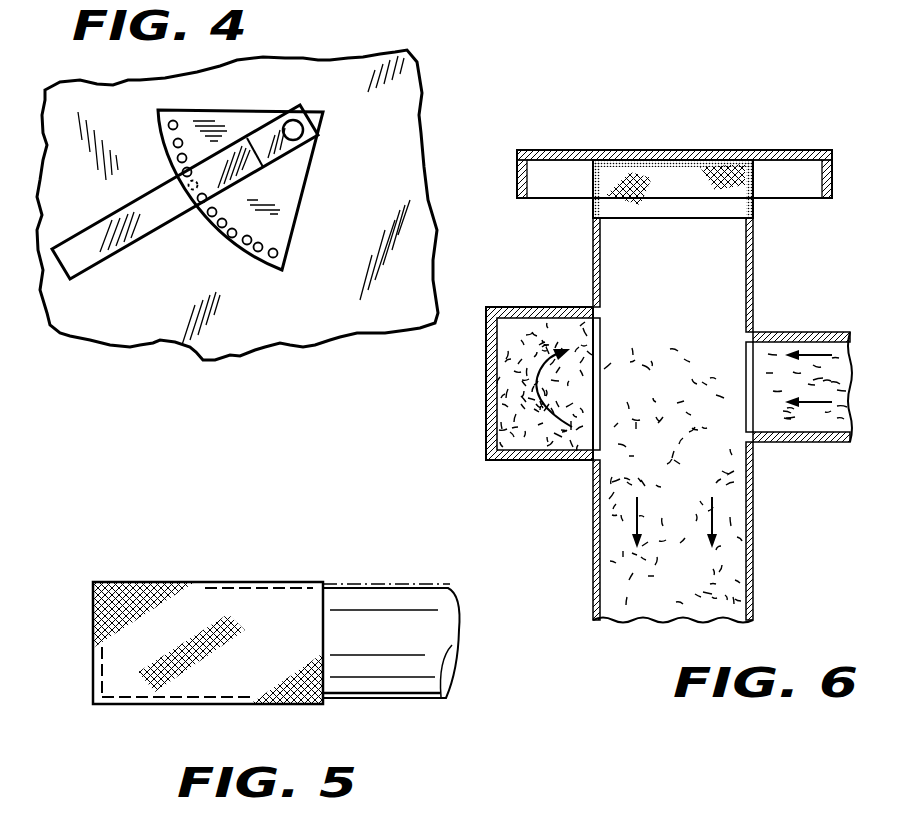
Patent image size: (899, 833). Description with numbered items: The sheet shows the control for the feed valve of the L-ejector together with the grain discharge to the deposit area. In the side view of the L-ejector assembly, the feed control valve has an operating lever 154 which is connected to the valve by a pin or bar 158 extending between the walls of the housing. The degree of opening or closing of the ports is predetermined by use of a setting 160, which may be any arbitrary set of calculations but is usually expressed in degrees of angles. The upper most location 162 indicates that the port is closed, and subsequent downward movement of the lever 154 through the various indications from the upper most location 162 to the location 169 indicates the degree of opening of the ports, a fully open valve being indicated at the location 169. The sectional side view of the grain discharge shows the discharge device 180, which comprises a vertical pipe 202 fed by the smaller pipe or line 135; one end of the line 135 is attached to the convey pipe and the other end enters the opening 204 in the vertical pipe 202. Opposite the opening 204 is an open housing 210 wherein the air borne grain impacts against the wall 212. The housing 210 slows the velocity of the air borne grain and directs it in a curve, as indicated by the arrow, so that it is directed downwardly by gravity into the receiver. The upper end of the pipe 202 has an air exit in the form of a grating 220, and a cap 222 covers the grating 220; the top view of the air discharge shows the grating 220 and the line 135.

In FIG. 5, the line 135 is at (368, 588).
In FIG. 6, the line 135 is at (797, 332).
In FIG. 4, the operating lever 154 is at (170, 220).
In FIG. 4, the pin or bar 158 is at (303, 131).
In FIG. 4, the setting 160 is at (248, 250).
In FIG. 4, the upper most location 162 is at (168, 126).
In FIG. 4, the location 169 is at (283, 265).
In FIG. 6, the discharge device 180 is at (664, 273).
In FIG. 6, the vertical pipe 202 is at (755, 290).
In FIG. 6, the opening 204 is at (745, 365).
In FIG. 6, the open housing 210 is at (538, 307).
In FIG. 6, the wall 212 is at (497, 413).
In FIG. 5, the grating 220 is at (228, 582).
In FIG. 6, the grating 220 is at (753, 208).
In FIG. 6, the cap 222 is at (595, 150).